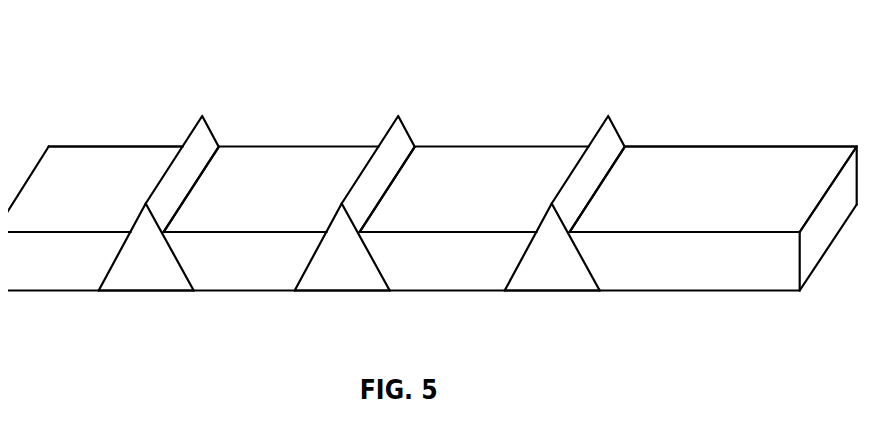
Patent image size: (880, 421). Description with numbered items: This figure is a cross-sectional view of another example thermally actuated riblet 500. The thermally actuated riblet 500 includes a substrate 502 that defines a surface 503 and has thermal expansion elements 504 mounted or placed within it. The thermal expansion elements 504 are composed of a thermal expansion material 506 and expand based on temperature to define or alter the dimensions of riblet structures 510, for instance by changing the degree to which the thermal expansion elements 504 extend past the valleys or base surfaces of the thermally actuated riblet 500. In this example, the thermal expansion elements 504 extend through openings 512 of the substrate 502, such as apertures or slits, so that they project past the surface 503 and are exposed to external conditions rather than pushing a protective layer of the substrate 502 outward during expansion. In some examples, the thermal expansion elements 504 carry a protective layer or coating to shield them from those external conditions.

The thermally actuated riblet 500 is at (115, 54).
The substrate 502 is at (118, 147).
The surface 503 is at (723, 180).
The thermal expansion element 504 is at (101, 241).
The thermal expansion material 506 is at (152, 293).
The riblet structure 510 is at (205, 140).
The opening 512 is at (175, 217).